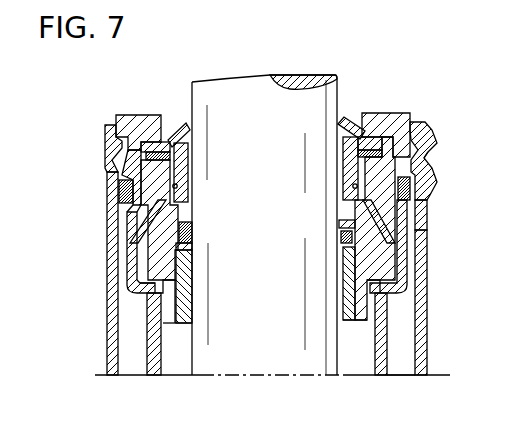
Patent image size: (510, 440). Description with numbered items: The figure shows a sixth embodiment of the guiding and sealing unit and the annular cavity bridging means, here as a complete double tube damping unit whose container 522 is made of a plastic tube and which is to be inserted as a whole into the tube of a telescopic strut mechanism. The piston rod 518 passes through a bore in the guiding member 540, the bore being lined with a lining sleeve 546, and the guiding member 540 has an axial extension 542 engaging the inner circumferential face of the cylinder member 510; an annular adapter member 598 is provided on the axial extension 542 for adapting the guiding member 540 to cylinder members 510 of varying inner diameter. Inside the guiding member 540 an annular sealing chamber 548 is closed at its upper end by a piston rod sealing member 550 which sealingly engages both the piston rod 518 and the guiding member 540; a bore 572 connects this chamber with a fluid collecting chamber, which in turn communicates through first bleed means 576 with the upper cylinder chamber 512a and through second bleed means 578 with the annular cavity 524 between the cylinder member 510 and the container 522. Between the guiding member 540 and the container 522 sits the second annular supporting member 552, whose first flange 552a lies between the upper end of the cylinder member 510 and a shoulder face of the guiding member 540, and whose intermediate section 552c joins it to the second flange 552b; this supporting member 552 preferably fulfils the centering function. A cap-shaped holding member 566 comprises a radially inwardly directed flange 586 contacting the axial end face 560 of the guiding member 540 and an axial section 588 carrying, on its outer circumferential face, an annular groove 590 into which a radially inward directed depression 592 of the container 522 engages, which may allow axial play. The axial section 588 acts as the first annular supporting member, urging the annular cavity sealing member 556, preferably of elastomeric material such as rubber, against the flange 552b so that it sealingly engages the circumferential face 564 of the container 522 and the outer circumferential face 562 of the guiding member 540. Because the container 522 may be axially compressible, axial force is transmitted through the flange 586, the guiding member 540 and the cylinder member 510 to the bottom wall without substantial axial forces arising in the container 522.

The cylinder member 510 is at (153, 377).
The upper cylinder chamber 512a is at (362, 358).
The piston rod 518 is at (278, 362).
The container 522 is at (422, 325).
The annular cavity 524 is at (405, 365).
The guiding member 540 is at (167, 263).
The axial extension 542 is at (175, 292).
The lining sleeve 546 is at (343, 282).
The annular sealing chamber 548 is at (193, 190).
The piston rod sealing member 550 is at (192, 122).
The second annular supporting member 552 is at (133, 283).
The first flange 552a is at (147, 298).
The second flange 552b is at (118, 205).
The intermediate section 552c is at (130, 235).
The annular cavity sealing member 556 is at (422, 193).
The axial end face 560 is at (112, 151).
The outer circumferential face 562 is at (340, 168).
The inner circumferential face 564 is at (120, 365).
The holding member 566 is at (143, 115).
The bore 572 is at (192, 207).
The first bleed means 576 is at (180, 325).
The second bleed means 578 is at (127, 253).
The radially inwardly directed flange 586 is at (380, 112).
The axial section 588 is at (415, 170).
The annular groove 590 is at (412, 123).
The radially inward directed depression 592 is at (425, 150).
The annular adapter member 598 is at (162, 317).